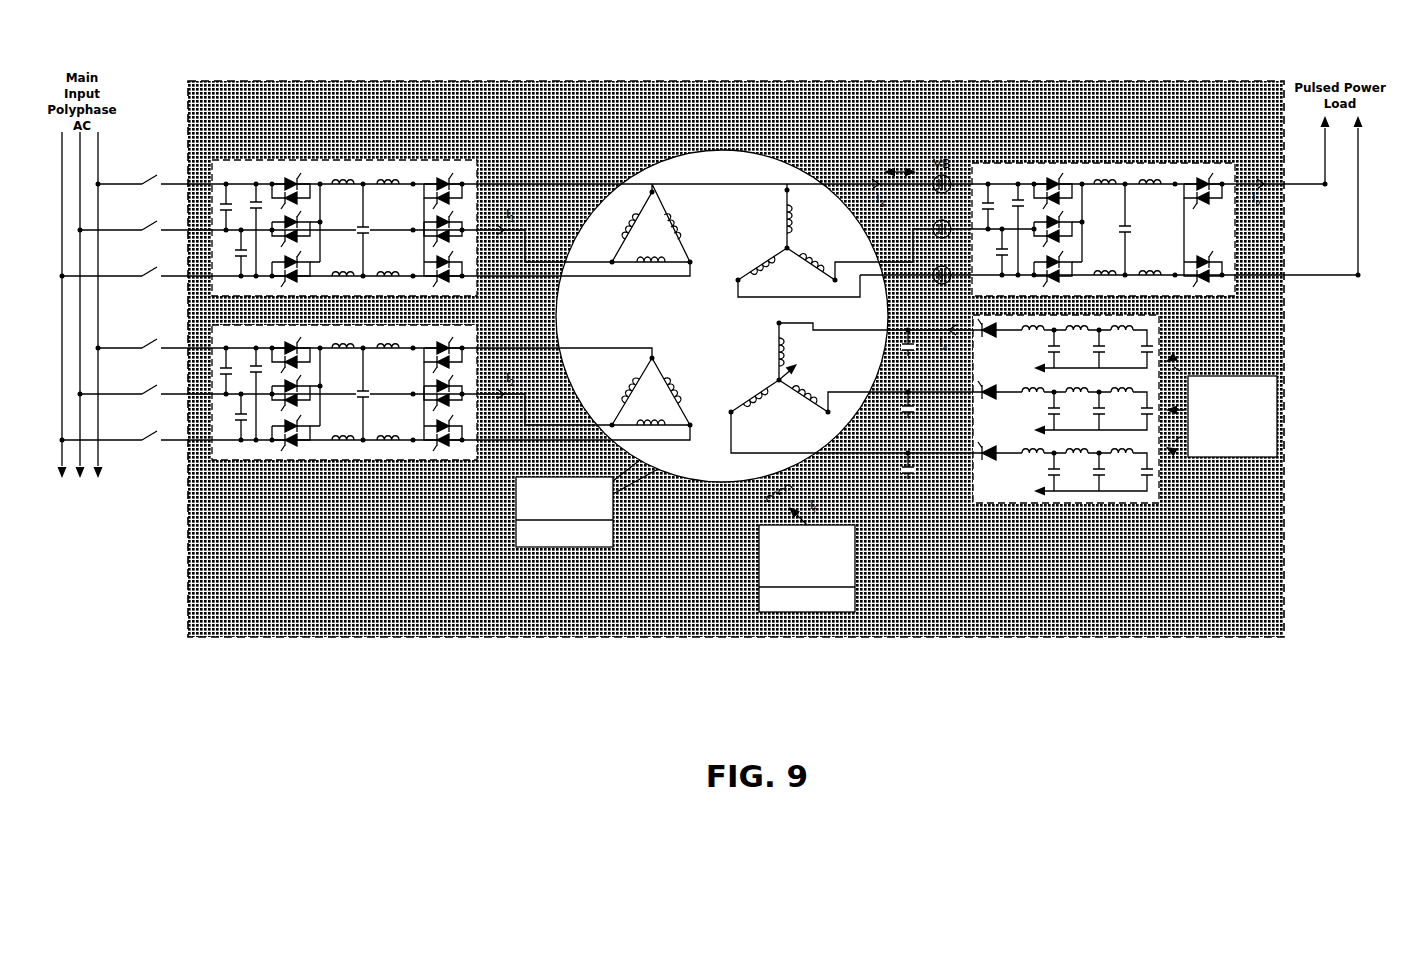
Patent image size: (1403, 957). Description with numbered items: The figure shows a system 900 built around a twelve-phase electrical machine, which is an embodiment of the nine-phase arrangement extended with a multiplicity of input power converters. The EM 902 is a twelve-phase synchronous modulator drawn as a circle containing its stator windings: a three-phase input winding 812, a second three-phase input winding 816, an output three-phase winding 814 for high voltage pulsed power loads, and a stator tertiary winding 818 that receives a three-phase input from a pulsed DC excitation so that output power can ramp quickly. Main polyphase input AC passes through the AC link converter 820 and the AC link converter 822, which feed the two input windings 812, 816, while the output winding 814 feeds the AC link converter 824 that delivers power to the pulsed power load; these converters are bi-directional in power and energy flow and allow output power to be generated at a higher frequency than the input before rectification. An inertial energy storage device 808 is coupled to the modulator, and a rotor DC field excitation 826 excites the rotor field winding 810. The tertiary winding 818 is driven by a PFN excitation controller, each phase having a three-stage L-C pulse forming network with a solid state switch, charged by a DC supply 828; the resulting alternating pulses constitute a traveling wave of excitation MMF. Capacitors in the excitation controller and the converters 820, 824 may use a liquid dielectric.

The system 900 is at (1036, 70).
The AC link converter 820 is at (344, 217).
The AC link converter 822 is at (344, 381).
The AC link converter 824 is at (1103, 218).
The EM 902 is at (722, 293).
The 3-phase input winding 812 is at (641, 249).
The 3-phase input winding 816 is at (630, 379).
The output 3-phase winding 814 is at (819, 240).
The stator tertiary winding 818 is at (842, 387).
The inertial energy storage device 808 is at (837, 431).
The rotor field winding 810 is at (748, 514).
The rotor field excitation 826 is at (807, 568).
The DC supply 828 is at (1220, 405).